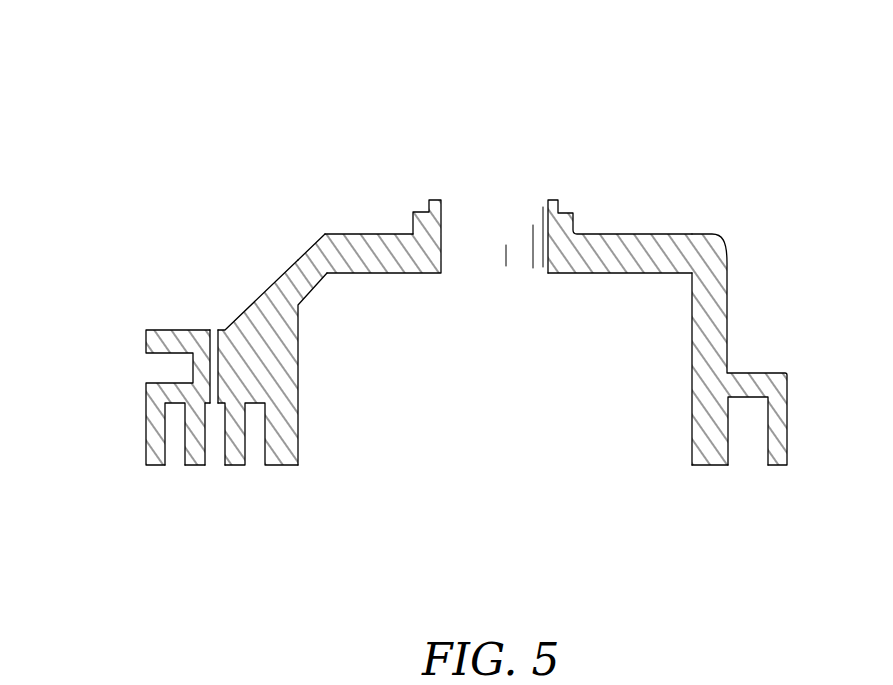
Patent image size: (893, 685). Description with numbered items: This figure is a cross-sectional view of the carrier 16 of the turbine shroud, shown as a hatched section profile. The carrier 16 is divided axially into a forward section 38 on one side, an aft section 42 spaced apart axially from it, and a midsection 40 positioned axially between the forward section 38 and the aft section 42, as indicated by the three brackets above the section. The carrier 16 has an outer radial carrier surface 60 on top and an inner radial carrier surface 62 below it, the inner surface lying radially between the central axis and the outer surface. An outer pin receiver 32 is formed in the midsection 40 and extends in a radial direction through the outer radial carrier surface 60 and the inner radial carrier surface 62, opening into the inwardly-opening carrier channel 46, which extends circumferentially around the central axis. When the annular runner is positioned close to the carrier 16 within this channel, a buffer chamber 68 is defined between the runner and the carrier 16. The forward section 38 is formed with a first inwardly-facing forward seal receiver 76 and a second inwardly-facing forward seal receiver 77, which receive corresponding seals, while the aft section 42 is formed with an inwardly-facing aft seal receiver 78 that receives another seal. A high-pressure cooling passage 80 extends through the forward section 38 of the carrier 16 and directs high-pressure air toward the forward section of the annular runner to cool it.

The carrier 16 is at (138, 53).
The forward section 38 is at (294, 132).
The midsection 40 is at (693, 132).
The aft section 42 is at (788, 132).
The outer pin receiver 32 is at (517, 232).
The outer radial carrier surface 60 is at (382, 236).
The inner radial carrier surface 62 is at (625, 275).
The inwardly-opening carrier channel 46 is at (402, 463).
The buffer chamber 68 is at (613, 448).
The first inwardly-facing forward seal receiver 76 is at (170, 448).
The second inwardly-facing forward seal receiver 77 is at (252, 448).
The inwardly-facing aft seal receiver 78 is at (748, 448).
The high-pressure cooling passage 80 is at (214, 328).